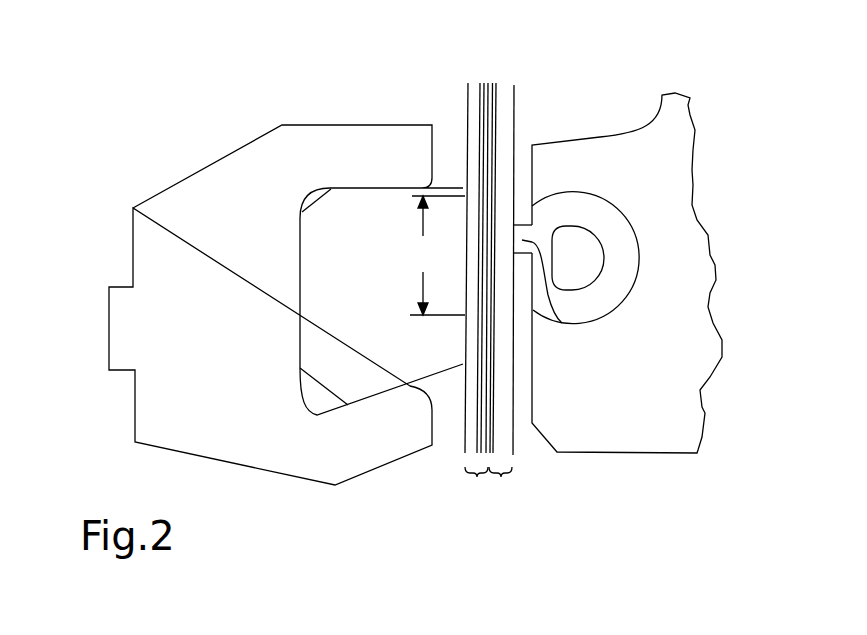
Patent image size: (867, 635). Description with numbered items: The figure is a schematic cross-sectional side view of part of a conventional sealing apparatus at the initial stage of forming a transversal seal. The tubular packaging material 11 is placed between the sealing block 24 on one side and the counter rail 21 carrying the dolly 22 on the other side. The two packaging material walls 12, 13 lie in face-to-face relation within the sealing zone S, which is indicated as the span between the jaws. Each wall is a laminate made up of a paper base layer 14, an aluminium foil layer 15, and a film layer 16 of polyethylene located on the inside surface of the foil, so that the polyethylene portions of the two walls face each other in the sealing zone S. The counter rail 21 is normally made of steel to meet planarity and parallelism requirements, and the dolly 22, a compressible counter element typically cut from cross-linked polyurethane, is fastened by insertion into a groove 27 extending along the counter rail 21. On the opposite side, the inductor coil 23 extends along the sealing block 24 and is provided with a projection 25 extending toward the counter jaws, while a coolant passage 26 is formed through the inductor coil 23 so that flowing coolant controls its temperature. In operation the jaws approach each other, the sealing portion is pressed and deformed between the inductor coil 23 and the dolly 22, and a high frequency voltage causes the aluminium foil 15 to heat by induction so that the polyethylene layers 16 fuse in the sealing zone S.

The packaging material 11 is at (537, 79).
The packaging material wall 12 is at (475, 483).
The packaging material wall 13 is at (502, 483).
The paper base layer 14 is at (503, 90).
The aluminium foil layer 15 is at (493, 83).
The film layer 16 is at (492, 82).
The counter rail 21 is at (211, 193).
The dolly 22 is at (353, 222).
The inductor coil 23 is at (618, 292).
The sealing block 24 is at (623, 145).
The projection 25 is at (562, 323).
The coolant passage 26 is at (588, 255).
The groove 27 is at (317, 397).
The sealing zone S is at (437, 255).